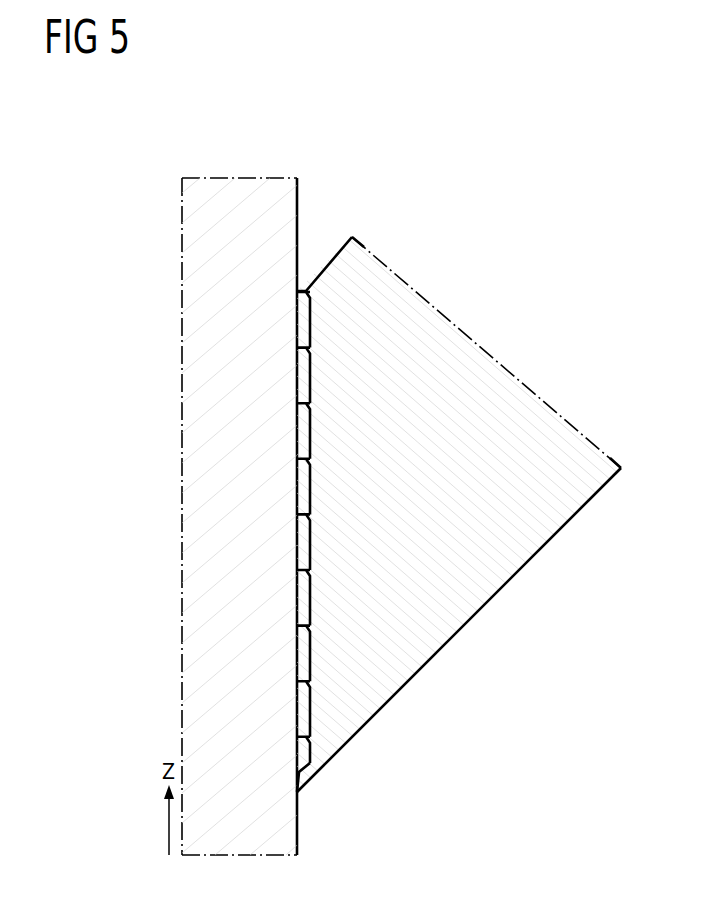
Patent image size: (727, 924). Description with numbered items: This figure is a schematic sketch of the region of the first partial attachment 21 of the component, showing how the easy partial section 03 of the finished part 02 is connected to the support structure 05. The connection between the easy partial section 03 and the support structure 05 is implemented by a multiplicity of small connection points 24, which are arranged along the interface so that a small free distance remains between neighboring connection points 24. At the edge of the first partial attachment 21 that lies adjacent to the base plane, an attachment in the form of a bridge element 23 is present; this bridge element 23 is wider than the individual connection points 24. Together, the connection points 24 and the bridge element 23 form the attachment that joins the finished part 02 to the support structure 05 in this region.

The finished part 02 is at (178, 516).
The easy partial section 03 is at (190, 355).
The support structure 05 is at (468, 358).
The first partial attachment 21 is at (306, 276).
The bridge element 23 is at (305, 773).
The connection points 24 is at (302, 630).